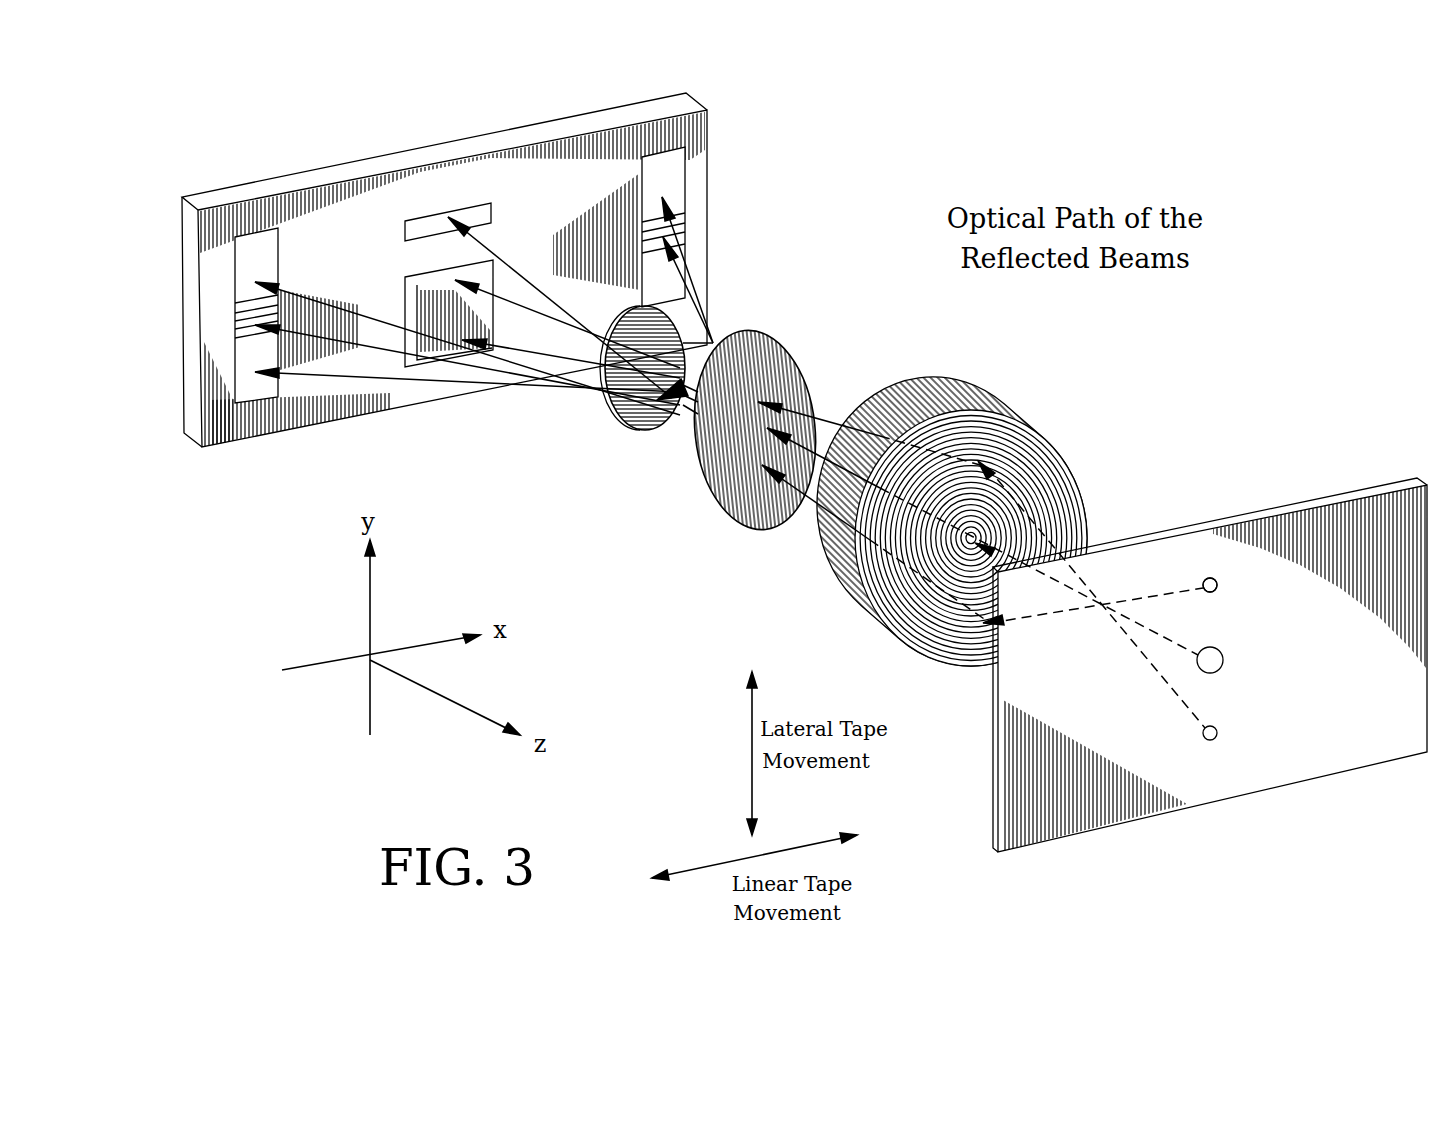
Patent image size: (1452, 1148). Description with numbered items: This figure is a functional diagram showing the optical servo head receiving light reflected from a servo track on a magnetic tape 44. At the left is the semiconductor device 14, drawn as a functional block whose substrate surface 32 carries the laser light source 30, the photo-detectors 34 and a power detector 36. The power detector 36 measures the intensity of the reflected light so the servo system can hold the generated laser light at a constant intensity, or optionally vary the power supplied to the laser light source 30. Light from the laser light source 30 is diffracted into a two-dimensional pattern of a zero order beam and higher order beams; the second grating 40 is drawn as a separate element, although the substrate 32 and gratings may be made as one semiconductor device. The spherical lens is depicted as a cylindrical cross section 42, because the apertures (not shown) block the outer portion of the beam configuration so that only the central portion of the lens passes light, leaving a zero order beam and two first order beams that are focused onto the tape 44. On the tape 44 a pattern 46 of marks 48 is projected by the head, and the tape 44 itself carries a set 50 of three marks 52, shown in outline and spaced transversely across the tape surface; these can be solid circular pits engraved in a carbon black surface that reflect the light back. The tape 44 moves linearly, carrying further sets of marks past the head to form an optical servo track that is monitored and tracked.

The semiconductor device 14 is at (745, 293).
The laser light source 30 is at (440, 360).
The substrate surface 32 is at (362, 165).
The photo-detectors 34 is at (680, 198).
The power detector 36 is at (470, 212).
The second grating 40 is at (806, 372).
The cross section of the spherical lens 42 is at (975, 395).
The magnetic tape 44 is at (1386, 752).
The pattern of marks 46 is at (1212, 557).
The marks 48 is at (1204, 579).
The set of marks 50 is at (1245, 662).
The marks 52 is at (1277, 511).